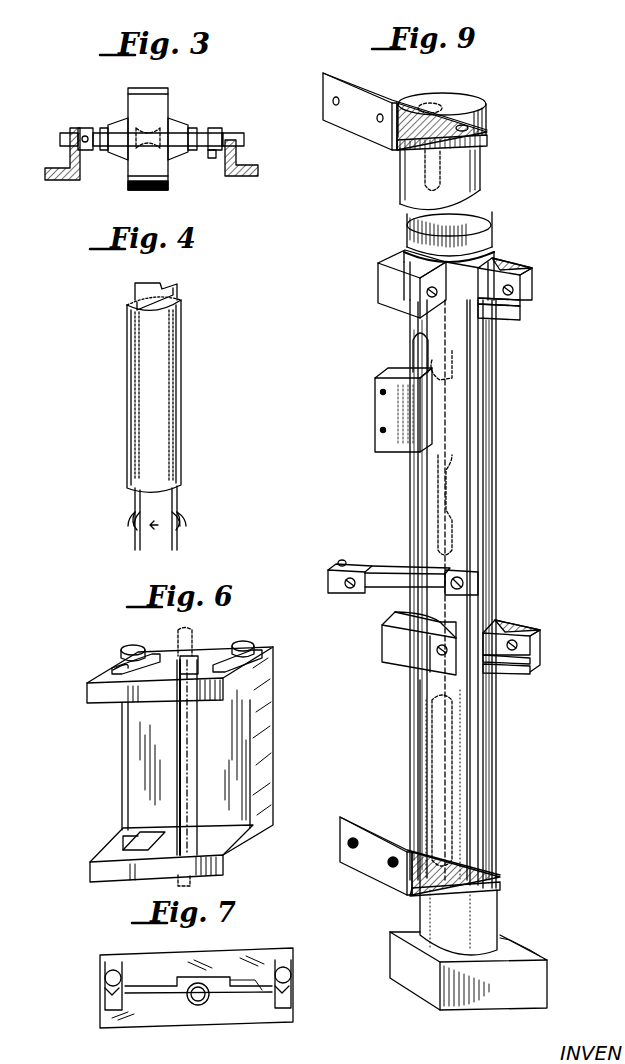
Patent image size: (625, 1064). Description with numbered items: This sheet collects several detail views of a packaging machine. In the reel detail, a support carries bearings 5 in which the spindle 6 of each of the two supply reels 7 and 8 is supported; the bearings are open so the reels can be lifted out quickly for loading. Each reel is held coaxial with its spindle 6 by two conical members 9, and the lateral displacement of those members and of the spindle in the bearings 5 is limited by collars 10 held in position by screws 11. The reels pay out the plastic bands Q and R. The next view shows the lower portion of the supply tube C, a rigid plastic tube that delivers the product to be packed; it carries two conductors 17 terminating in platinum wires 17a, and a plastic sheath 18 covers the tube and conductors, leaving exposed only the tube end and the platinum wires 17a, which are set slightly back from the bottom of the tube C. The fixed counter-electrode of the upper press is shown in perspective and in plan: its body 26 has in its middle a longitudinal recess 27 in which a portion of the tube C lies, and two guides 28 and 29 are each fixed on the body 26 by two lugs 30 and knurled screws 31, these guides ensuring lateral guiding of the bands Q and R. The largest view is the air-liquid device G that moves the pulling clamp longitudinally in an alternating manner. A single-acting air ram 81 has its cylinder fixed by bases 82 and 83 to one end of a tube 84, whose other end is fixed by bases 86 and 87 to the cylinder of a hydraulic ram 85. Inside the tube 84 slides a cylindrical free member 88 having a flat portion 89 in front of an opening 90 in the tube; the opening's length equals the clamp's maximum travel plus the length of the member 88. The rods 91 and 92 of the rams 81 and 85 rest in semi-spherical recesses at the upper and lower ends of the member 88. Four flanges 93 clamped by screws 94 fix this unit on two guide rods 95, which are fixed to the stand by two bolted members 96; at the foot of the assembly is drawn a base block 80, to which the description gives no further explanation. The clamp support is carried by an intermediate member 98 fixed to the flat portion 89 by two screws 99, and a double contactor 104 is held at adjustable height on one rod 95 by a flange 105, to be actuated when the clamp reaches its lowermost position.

In FIG. 3, the bearings 5 is at (80, 168).
In FIG. 3, the spindle 6 is at (232, 134).
In FIG. 3, the supply reel 7 is at (166, 100).
In FIG. 3, the supply reel 8 is at (158, 139).
In FIG. 3, the conical members 9 is at (124, 122).
In FIG. 3, the collars 10 is at (86, 128).
In FIG. 3, the screws 11 is at (64, 132).
In FIG. 4, the conductors 17 is at (128, 402).
In FIG. 4, the platinum wires 17a is at (140, 508).
In FIG. 4, the sheath 18 is at (128, 368).
In FIG. 4, the supply tube C is at (172, 516).
In FIG. 6, the body 26 is at (128, 756).
In FIG. 7, the body 26 is at (170, 955).
In FIG. 6, the longitudinal recess 27 is at (188, 735).
In FIG. 7, the longitudinal recess 27 is at (212, 978).
In FIG. 6, the guide 28 is at (130, 700).
In FIG. 7, the guide 28 is at (108, 1020).
In FIG. 6, the guide 29 is at (128, 846).
In FIG. 6, the lugs 30 is at (120, 668).
In FIG. 7, the lugs 30 is at (106, 1000).
In FIG. 6, the knurled screws 31 is at (130, 648).
In FIG. 7, the knurled screws 31 is at (104, 980).
In FIG. 7, the band R is at (148, 992).
In FIG. 7, the band Q is at (150, 992).
In FIG. 9, the base 80 is at (468, 971).
In FIG. 9, the single-acting air ram 81 is at (490, 224).
In FIG. 9, the base 82 is at (492, 274).
In FIG. 9, the base 83 is at (508, 320).
In FIG. 9, the tube 84 is at (484, 488).
In FIG. 9, the hydraulic ram 85 is at (498, 786).
In FIG. 9, the base 86 is at (500, 624).
In FIG. 9, the base 87 is at (516, 666).
In FIG. 9, the free member 88 is at (442, 456).
In FIG. 9, the flat portion 89 is at (414, 364).
In FIG. 9, the opening 90 is at (420, 352).
In FIG. 9, the rod 91 is at (448, 376).
In FIG. 9, the rod 92 is at (428, 504).
In FIG. 9, the flanges 93 is at (380, 268).
In FIG. 9, the screws 94 is at (514, 300).
In FIG. 9, the guide rods 95 is at (420, 178).
In FIG. 9, the members 96 is at (366, 121).
In FIG. 9, the intermediate member 98 is at (424, 415).
In FIG. 9, the screws 99 is at (376, 428).
In FIG. 9, the double contactor 104 is at (368, 560).
In FIG. 9, the flange 105 is at (478, 590).
In FIG. 9, the air-liquid device G is at (397, 494).